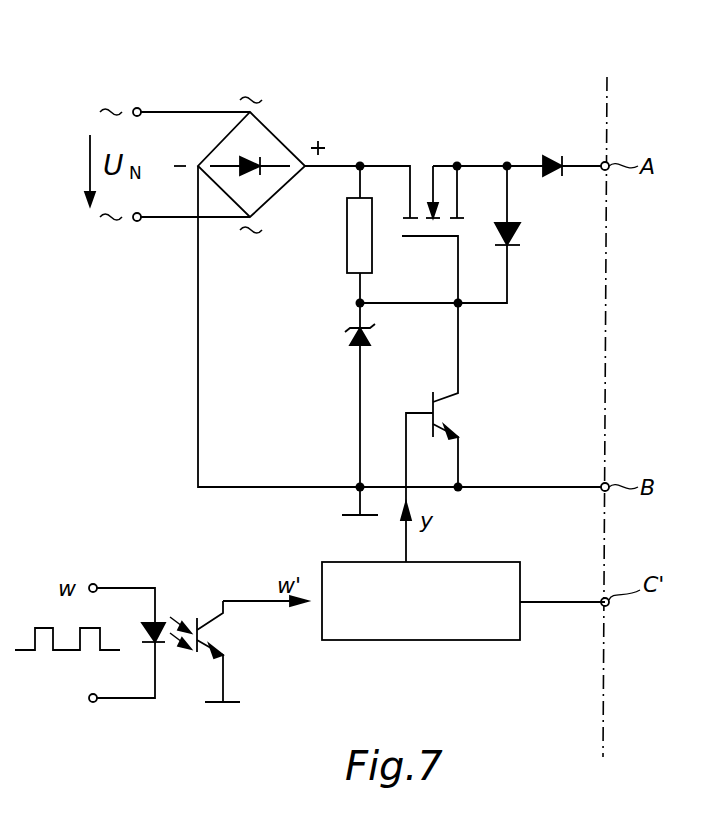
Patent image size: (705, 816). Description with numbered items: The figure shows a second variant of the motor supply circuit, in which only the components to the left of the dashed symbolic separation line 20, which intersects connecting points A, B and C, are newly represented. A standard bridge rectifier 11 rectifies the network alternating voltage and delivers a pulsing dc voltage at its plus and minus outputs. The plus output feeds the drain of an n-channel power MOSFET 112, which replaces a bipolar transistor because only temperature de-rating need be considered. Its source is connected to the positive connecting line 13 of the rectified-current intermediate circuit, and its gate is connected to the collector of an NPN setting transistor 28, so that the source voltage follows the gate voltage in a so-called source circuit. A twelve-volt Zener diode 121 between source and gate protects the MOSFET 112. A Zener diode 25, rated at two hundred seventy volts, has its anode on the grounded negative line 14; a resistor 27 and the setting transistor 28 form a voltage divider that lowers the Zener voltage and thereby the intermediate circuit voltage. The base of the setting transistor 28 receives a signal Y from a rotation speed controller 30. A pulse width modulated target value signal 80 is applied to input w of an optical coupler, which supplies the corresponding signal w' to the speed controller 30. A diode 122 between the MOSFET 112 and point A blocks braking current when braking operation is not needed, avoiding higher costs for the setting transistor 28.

The bridge rectifier 11 is at (258, 125).
The power MOSFET 112 is at (421, 163).
The diode 122 is at (548, 159).
The Zener diode 121 is at (520, 236).
The connecting line 13 is at (583, 164).
The connecting line 14 is at (557, 486).
The symbolic separation line 20 is at (608, 98).
The resistor 27 is at (357, 257).
The Zener diode 25 is at (347, 340).
The setting transistor 28 is at (433, 398).
The rotation speed controller 30 is at (424, 609).
The target value signal 80 is at (65, 652).